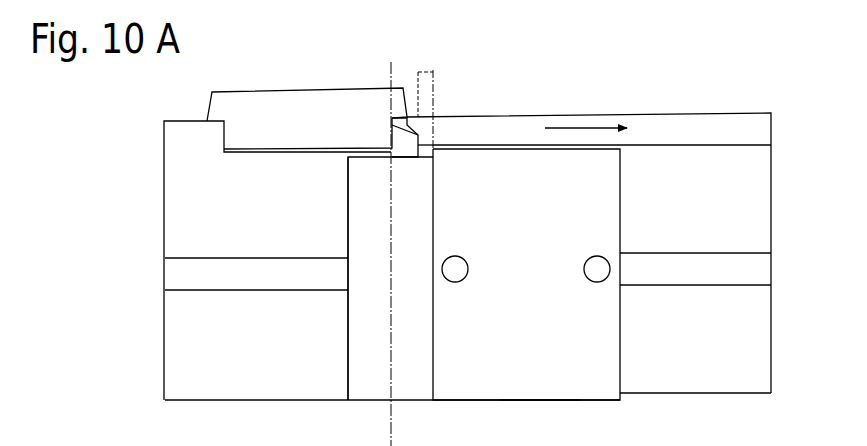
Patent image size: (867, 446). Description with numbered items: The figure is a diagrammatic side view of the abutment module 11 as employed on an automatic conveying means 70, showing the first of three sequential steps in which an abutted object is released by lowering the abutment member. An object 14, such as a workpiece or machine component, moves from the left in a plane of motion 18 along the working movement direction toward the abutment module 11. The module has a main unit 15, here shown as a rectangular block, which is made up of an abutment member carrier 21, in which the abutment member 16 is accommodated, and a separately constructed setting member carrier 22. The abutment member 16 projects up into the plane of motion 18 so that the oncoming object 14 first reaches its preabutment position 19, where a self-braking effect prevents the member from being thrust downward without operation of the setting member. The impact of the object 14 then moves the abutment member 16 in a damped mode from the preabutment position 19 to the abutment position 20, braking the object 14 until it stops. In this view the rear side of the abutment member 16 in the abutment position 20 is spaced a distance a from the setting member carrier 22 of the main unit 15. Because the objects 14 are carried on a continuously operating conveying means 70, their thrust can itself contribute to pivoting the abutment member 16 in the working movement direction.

The abutment module 11 is at (542, 366).
The object 14 is at (258, 110).
The main unit 15 is at (588, 402).
The abutment member 16 is at (403, 142).
The plane of motion 18 is at (677, 145).
The preabutment position 19 is at (410, 78).
The abutment position 20 is at (559, 301).
The abutment member carrier 21 is at (367, 332).
The setting member carrier 22 is at (552, 214).
The conveying means 70 is at (180, 206).